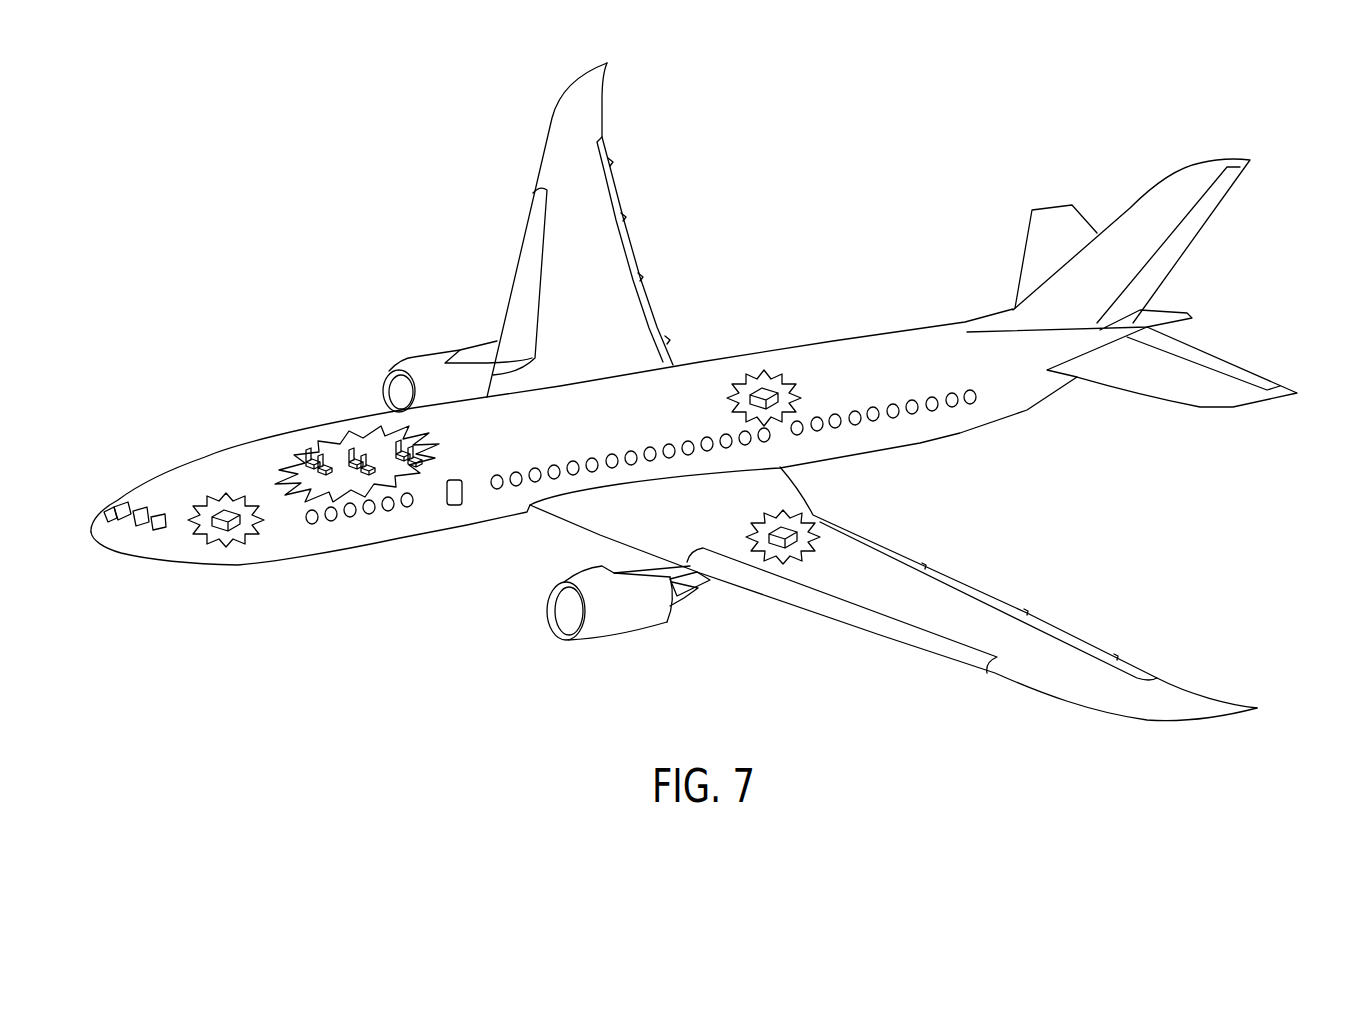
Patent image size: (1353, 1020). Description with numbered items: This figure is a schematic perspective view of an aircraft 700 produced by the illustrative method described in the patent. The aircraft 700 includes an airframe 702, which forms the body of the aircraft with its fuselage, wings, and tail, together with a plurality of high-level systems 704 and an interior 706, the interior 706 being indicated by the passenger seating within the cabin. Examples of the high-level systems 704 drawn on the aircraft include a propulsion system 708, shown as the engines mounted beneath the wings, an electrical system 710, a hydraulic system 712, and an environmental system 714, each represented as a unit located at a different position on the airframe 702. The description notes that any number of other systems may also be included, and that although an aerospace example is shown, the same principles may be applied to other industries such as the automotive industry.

The aircraft 700 is at (236, 190).
The airframe 702 is at (345, 403).
The high-level systems 704 is at (879, 298).
The interior 706 is at (313, 440).
The propulsion system 708 is at (423, 362).
The electrical system 710 is at (227, 508).
The hydraulic system 712 is at (786, 520).
The environmental system 714 is at (762, 385).